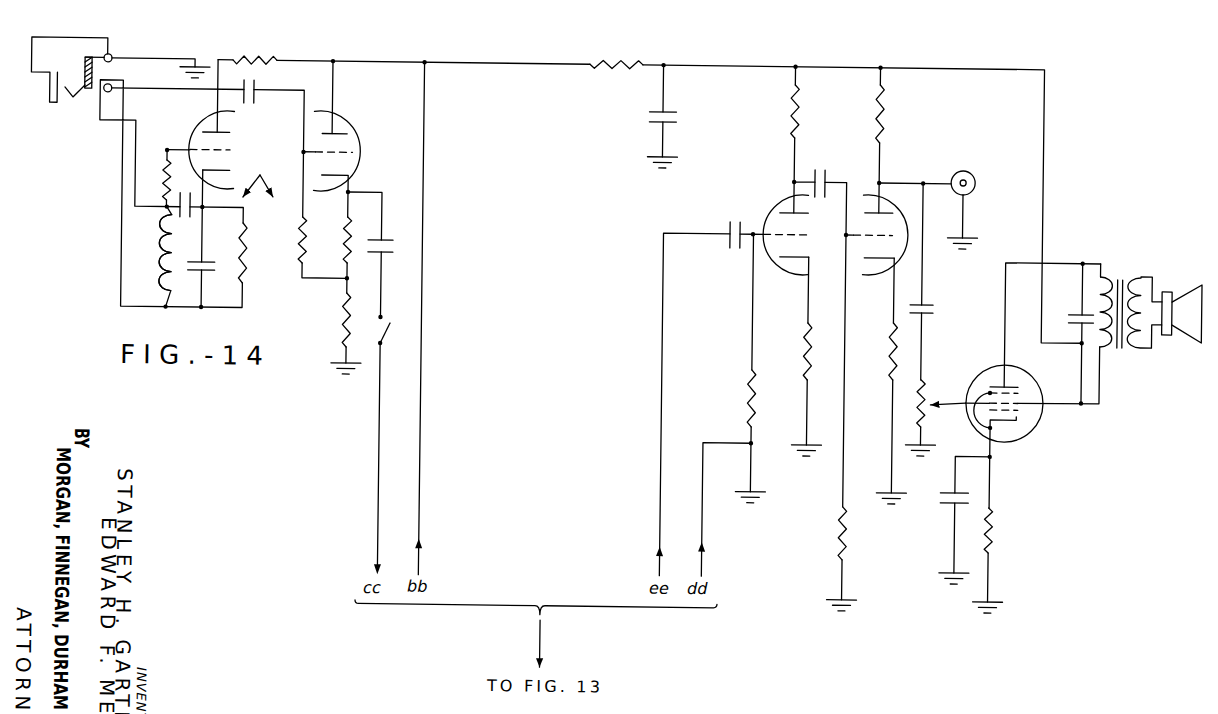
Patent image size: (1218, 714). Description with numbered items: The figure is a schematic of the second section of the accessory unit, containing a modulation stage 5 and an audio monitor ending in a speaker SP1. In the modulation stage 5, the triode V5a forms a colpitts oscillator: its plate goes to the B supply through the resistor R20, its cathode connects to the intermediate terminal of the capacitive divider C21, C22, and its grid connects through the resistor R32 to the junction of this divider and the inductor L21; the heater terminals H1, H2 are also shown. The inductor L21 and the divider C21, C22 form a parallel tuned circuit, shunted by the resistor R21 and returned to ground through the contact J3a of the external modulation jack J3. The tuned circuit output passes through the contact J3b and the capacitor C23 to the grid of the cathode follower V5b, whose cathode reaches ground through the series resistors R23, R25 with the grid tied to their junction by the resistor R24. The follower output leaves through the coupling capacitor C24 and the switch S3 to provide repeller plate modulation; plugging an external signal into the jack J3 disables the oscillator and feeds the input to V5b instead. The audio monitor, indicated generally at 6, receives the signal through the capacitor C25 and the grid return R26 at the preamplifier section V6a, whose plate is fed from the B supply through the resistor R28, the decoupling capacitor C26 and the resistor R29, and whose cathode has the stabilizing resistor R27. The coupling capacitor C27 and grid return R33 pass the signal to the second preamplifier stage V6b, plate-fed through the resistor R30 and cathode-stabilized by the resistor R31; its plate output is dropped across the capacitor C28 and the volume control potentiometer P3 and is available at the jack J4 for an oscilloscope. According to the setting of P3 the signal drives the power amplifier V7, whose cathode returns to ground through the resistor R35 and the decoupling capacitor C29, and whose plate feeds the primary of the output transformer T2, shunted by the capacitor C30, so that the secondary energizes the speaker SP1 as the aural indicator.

The external modulation jack J3 is at (118, 54).
The contact of external modulation jack J3a is at (96, 64).
The contact of external modulation jack J3b is at (95, 94).
The modulation stage 5 is at (91, 274).
The resistor R20 is at (244, 62).
The capacitor C23 is at (259, 92).
The modulation circuit oscillator V5a is at (230, 133).
The cathode follower V5b is at (340, 118).
The resistor R32 is at (164, 155).
The heater terminal H1 is at (255, 195).
The heater terminal H2 is at (278, 195).
The inductor L21 is at (149, 251).
The capacitive divider capacitor C21 is at (184, 222).
The capacitive divider capacitor C22 is at (206, 278).
The resistor R21 is at (246, 281).
The resistor R24 is at (299, 256).
The series resistor R23 is at (345, 226).
The series resistor R25 is at (340, 326).
The coupling capacitor C24 is at (380, 256).
The switch S3 is at (392, 342).
The resistor R29 is at (613, 60).
The decoupling capacitor C26 is at (670, 124).
The capacitor C25 is at (726, 219).
The preamplifier section V6a is at (763, 198).
The resistor R28 is at (799, 110).
The coupling capacitor C27 is at (824, 169).
The resistor R30 is at (884, 102).
The preamplifier stage V6b is at (893, 176).
The jack J4 is at (973, 174).
The stabilizing resistor R27 is at (805, 328).
The grid return R26 is at (758, 398).
The stabilizing resistor R31 is at (890, 327).
The capacitor C28 is at (929, 301).
The volume control potentiometer P3 is at (923, 376).
The grid return R33 is at (842, 542).
The decoupling capacitor C29 is at (955, 533).
The resistor R35 is at (1000, 518).
The audio output section 6 is at (1018, 582).
The power amplifier V7 is at (1043, 422).
The capacitor C30 is at (1076, 309).
The output transformer T2 is at (1118, 352).
The speaker SP1 is at (1189, 283).